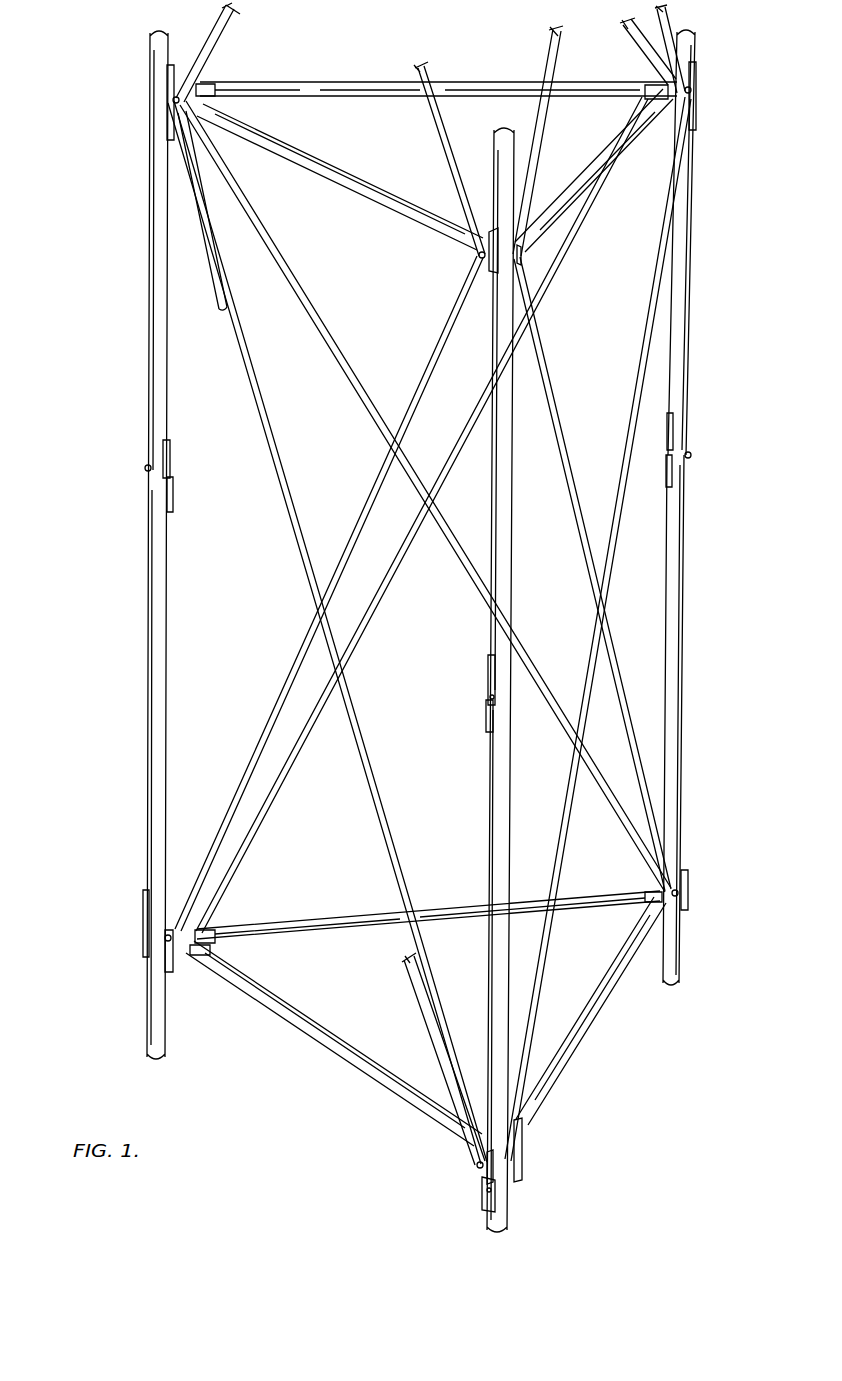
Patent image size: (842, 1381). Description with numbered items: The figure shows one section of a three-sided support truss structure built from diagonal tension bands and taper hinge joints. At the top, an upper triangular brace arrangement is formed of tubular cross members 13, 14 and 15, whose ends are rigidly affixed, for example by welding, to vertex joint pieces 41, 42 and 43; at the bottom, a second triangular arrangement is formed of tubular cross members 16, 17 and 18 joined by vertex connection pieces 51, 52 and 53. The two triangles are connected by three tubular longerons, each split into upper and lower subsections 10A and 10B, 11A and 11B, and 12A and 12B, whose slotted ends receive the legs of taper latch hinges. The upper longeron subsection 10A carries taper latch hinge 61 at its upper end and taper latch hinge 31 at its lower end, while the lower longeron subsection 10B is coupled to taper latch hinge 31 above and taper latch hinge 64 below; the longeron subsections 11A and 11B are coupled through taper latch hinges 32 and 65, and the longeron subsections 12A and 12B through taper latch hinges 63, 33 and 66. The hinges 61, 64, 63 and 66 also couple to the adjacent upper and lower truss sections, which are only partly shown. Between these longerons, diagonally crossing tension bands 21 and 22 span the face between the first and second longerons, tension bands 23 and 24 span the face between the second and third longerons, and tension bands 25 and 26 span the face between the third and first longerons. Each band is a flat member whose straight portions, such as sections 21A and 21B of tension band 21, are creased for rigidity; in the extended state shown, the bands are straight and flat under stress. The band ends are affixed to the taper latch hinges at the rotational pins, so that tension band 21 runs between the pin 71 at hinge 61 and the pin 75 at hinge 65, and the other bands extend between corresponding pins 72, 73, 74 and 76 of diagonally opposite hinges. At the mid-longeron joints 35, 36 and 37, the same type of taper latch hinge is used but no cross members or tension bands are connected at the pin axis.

The upper longeron subsection 10A is at (152, 245).
The lower longeron subsection 10B is at (146, 712).
The upper longeron subsection 11A is at (507, 522).
The lower longeron subsection 11B is at (492, 787).
The upper longeron subsection 12A is at (690, 215).
The lower longeron subsection 12B is at (690, 700).
The tubular cross member 13 is at (330, 168).
The tubular cross member 14 is at (580, 165).
The tubular cross member 15 is at (313, 83).
The tubular cross member 16 is at (322, 1040).
The tubular cross member 17 is at (572, 1050).
The tubular cross member 18 is at (332, 912).
The tension band 21 is at (283, 458).
The straight section of tension band 21A is at (190, 222).
The straight section of tension band 21B is at (436, 1052).
The tension band 22 is at (362, 522).
The tension band 23 is at (562, 428).
The tension band 24 is at (618, 512).
The tension band 25 is at (465, 562).
The tension band 26 is at (370, 612).
The taper latch hinge 31 is at (172, 460).
The taper latch hinge 32 is at (486, 697).
The taper latch hinge 33 is at (690, 452).
The joint 35 is at (150, 480).
The joint 36 is at (500, 705).
The joint 37 is at (690, 480).
The vertex joint piece 41 is at (220, 97).
The vertex joint piece 42 is at (490, 230).
The vertex joint piece 43 is at (648, 100).
The vertex connection piece 51 is at (215, 945).
The vertex connection piece 52 is at (483, 1140).
The vertex connection piece 53 is at (652, 905).
The taper latch hinge 61 is at (168, 120).
The taper latch hinge 63 is at (697, 115).
The taper latch hinge 64 is at (170, 975).
The taper latch hinge 65 is at (495, 1200).
The taper latch hinge 66 is at (690, 888).
The pin 71 is at (176, 102).
The pin 72 is at (478, 262).
The pin 73 is at (690, 90).
The pin 74 is at (160, 945).
The pin 75 is at (478, 1167).
The pin 76 is at (686, 905).